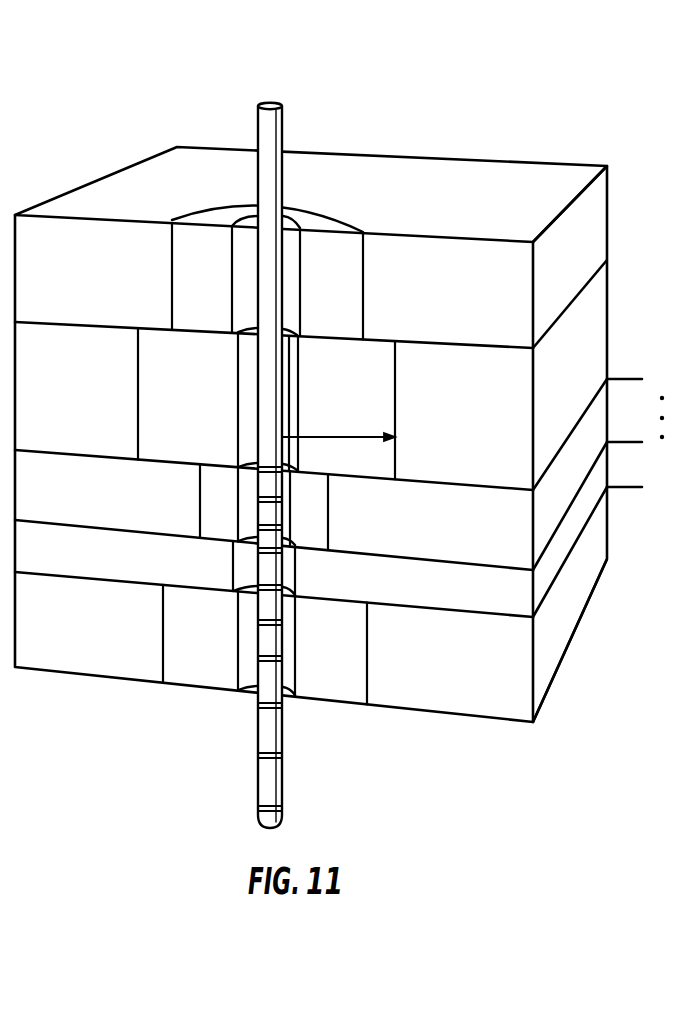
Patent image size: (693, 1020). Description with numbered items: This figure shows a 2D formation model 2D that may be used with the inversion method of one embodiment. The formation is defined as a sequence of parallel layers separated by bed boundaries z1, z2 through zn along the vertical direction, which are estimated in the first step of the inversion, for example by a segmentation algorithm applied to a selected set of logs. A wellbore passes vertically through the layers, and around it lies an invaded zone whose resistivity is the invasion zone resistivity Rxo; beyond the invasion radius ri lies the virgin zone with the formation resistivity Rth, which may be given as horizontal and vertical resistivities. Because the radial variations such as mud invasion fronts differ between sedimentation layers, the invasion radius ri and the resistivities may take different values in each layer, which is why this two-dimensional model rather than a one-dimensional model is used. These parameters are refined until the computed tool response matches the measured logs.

The 2D formation model 2D is at (328, 434).
The invasion zone resistivity Rxo is at (251, 400).
The formation resistivity Rth is at (450, 410).
The invasion radius ri is at (332, 449).
The bed boundary z1 is at (607, 166).
The bed boundary z2 is at (607, 260).
The bed boundary zn is at (607, 559).